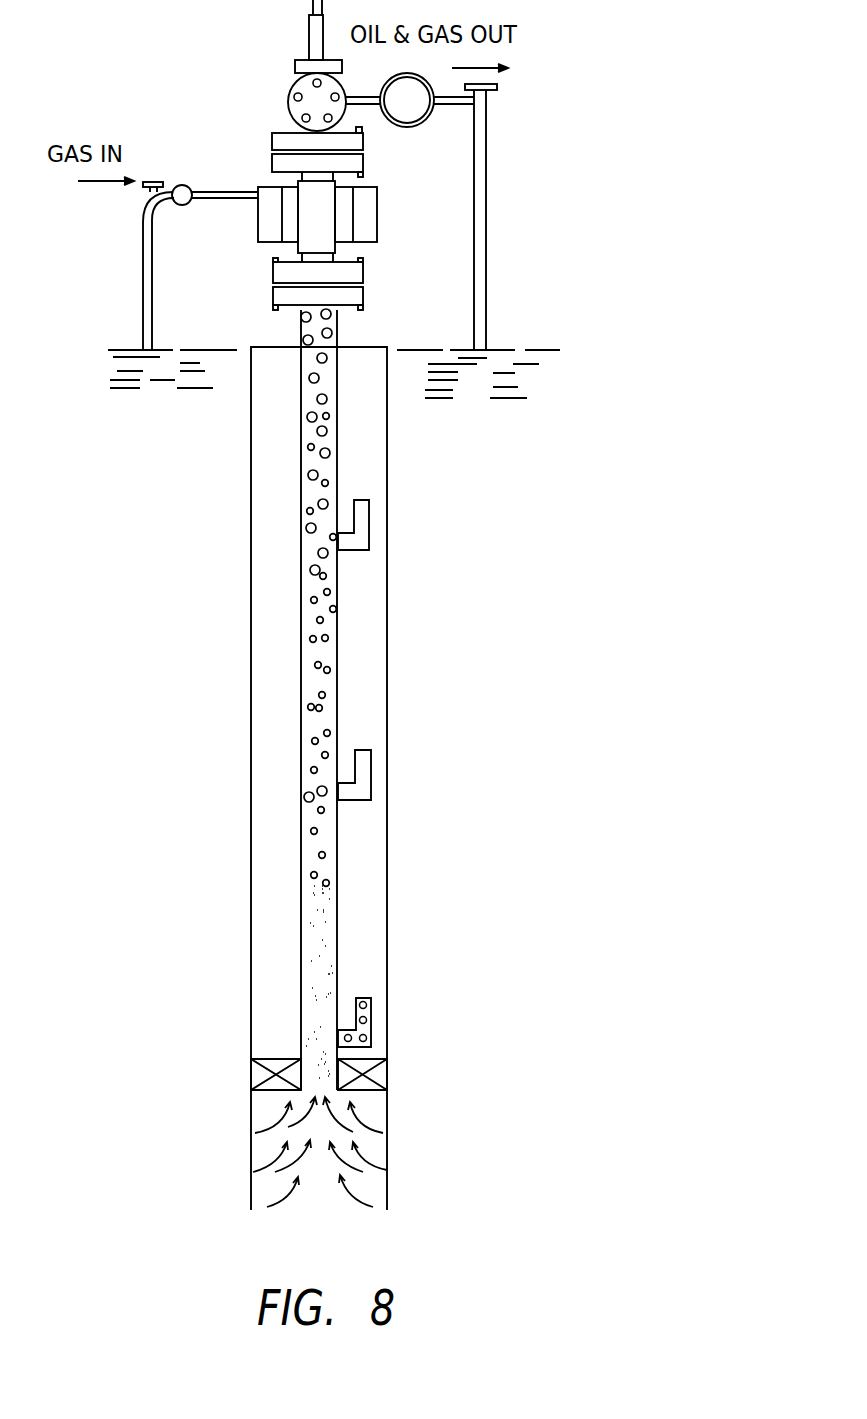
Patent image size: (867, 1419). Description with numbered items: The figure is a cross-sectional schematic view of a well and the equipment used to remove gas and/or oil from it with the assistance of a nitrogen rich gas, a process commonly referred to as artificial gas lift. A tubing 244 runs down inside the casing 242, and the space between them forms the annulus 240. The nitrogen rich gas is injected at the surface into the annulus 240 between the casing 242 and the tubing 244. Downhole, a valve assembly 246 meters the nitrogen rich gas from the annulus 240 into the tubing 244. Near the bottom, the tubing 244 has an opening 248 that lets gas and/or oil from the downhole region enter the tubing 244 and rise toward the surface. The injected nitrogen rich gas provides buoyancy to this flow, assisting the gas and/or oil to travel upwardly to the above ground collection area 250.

The annulus 240 is at (360, 472).
The casing 242 is at (388, 692).
The tubing 244 is at (339, 623).
The valve assembly 246 is at (371, 1012).
The opening 248 is at (315, 1077).
The above ground collection area 250 is at (487, 200).